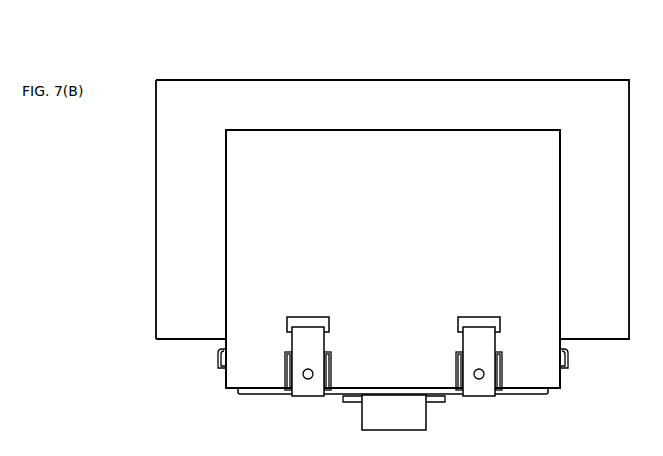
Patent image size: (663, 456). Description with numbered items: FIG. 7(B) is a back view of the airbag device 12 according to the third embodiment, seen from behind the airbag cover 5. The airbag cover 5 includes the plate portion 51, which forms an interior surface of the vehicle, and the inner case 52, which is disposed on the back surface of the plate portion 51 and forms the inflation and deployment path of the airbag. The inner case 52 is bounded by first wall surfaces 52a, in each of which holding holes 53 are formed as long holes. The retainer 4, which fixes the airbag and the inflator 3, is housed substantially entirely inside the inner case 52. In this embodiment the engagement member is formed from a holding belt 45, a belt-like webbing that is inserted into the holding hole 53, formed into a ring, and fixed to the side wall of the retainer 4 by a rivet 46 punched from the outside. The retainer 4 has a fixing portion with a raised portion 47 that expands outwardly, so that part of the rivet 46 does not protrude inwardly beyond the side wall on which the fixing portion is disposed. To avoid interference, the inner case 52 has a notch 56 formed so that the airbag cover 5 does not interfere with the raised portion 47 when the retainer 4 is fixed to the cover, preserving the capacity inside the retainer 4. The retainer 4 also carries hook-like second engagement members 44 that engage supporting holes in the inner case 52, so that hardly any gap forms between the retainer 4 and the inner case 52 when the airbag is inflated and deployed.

The airbag device 12 is at (563, 59).
The airbag cover 5 is at (151, 179).
The plate portion 51 is at (396, 80).
The inner case 52 is at (223, 259).
The first wall surface 52a is at (409, 254).
The retainer 4 is at (235, 398).
The second engagement member 44 is at (218, 360).
The raised portion 47 is at (285, 370).
The notch 56 is at (333, 370).
The holding hole 53 is at (312, 316).
The holding belt 45 is at (326, 340).
The rivet 46 is at (308, 380).
The inflator 3 is at (399, 420).